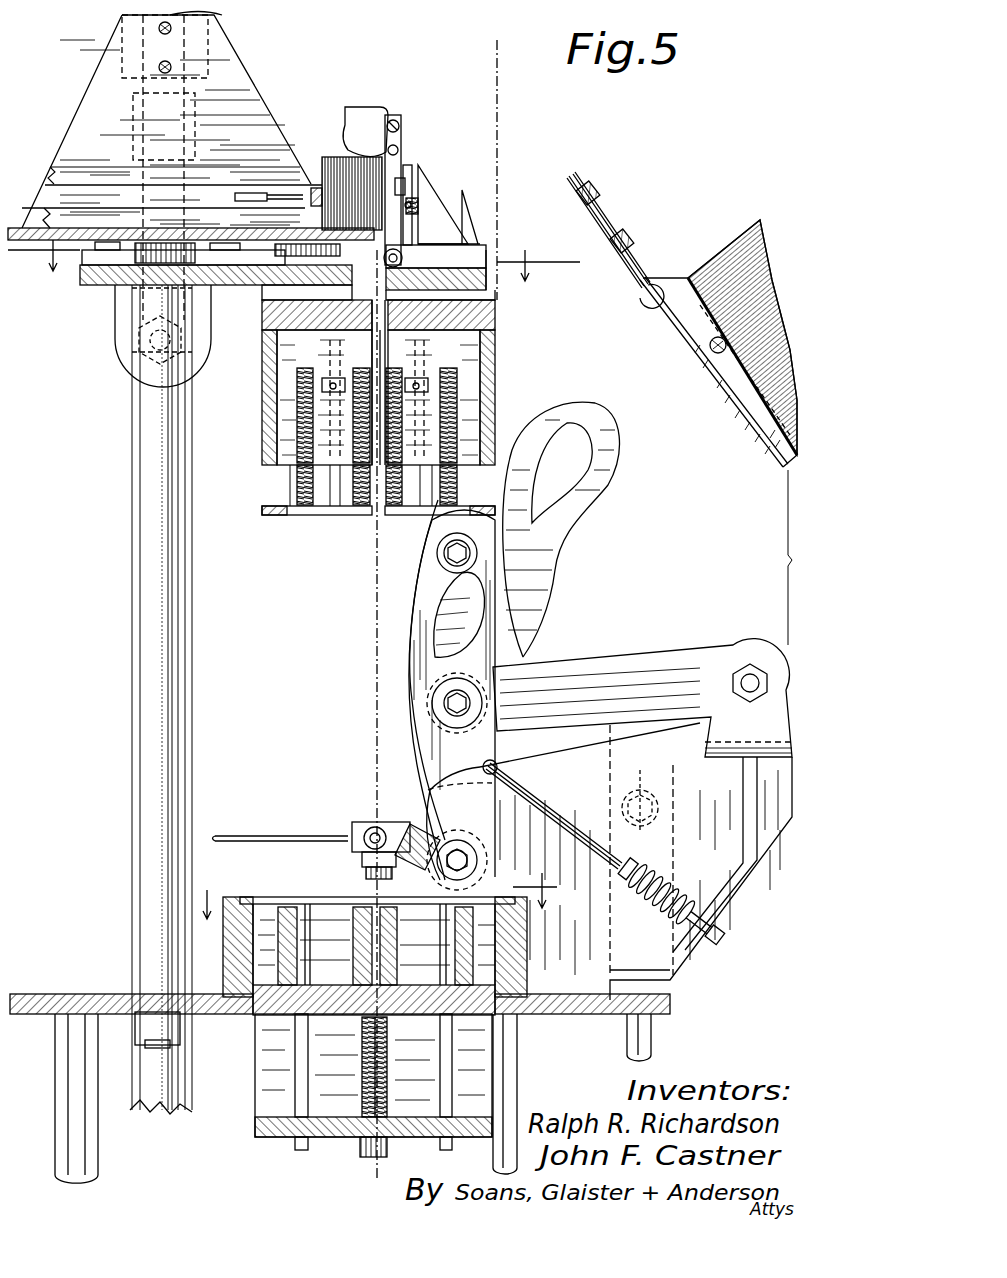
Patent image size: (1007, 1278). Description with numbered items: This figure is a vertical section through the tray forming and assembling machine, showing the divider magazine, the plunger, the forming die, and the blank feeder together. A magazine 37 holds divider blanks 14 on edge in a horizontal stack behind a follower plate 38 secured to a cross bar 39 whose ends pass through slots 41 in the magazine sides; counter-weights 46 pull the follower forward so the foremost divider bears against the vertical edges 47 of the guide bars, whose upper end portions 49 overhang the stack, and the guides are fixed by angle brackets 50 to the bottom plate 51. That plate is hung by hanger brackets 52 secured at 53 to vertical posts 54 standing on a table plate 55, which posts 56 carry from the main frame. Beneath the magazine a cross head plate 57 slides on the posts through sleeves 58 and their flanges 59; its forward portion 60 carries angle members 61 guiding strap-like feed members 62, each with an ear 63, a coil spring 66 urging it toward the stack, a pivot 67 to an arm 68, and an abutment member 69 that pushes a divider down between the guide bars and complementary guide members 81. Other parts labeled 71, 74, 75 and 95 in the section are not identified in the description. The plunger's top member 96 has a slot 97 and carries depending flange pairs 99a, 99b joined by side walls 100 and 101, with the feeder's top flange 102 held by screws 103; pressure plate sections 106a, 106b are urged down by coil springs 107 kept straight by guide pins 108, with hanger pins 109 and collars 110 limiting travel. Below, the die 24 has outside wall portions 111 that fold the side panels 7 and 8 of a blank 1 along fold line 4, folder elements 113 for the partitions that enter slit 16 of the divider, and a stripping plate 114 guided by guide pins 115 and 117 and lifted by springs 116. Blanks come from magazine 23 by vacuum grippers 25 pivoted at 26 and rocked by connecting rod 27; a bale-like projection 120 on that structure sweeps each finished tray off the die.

The main body member 1 is at (737, 237).
The fold line 4 is at (501, 52).
The marginal side panel 7 is at (252, 895).
The marginal side panel 8 is at (508, 895).
The longitudinal divider 14 is at (40, 268).
The slit 16 is at (228, 888).
The magazine 23 is at (663, 329).
The forming die structure 24 is at (529, 961).
The vacuum grippers 25 is at (370, 890).
The pivot 26 is at (750, 672).
The connecting rod 27 is at (652, 1040).
The magazine 37 is at (256, 163).
The follower plate 38 is at (325, 190).
The cross bar 39 is at (314, 188).
The slots 41 is at (88, 195).
The counter-weights 46 is at (428, 378).
The vertical edges 47 is at (423, 162).
The upper end portions 49 is at (362, 118).
The angle brackets 50 is at (440, 208).
The bottom plate 51 is at (58, 230).
The hanger brackets 52 is at (102, 80).
The securing means 53 is at (123, 50).
The vertical posts 54 is at (160, 668).
The table plate 55 is at (80, 994).
The posts 56 is at (60, 1155).
The cross head plate 57 is at (95, 285).
The sleeves 58 is at (133, 148).
The flanges 59 is at (92, 258).
The plate portion 60 is at (472, 270).
The angle members 61 is at (462, 244).
The feed members 62 is at (399, 152).
The ear 63 is at (408, 185).
The coil spring 66 is at (405, 258).
The pivot 67 is at (398, 268).
The arm 68 is at (443, 257).
The abutment member 69 is at (386, 132).
The spring 71 is at (427, 198).
The column rod 74 is at (132, 552).
The nut 75 is at (140, 338).
The complementary guide members 81 is at (350, 488).
The screw 95 is at (400, 126).
The top member 96 is at (482, 318).
The slot 97 is at (368, 382).
The flange portion 99a is at (277, 420).
The flange portion 99b is at (480, 378).
The side wall 100 is at (265, 338).
The side wall 101 is at (492, 333).
The horizontal top flange 102 is at (400, 297).
The screws 103 is at (398, 350).
The pressure plate section 106a is at (288, 515).
The pressure plate section 106b is at (392, 515).
The coil springs 107 is at (297, 478).
The guide pins 108 is at (297, 495).
The hanger pins 109 is at (297, 400).
The collars 110 is at (330, 378).
The outside wall portions 111 is at (235, 925).
The folder elements 113 is at (353, 952).
The stripping plate 114 is at (330, 902).
The guide pins 115 is at (388, 1040).
The springs 116 is at (388, 1060).
The guide pins 117 is at (298, 1100).
The bale-like projection 120 is at (222, 835).